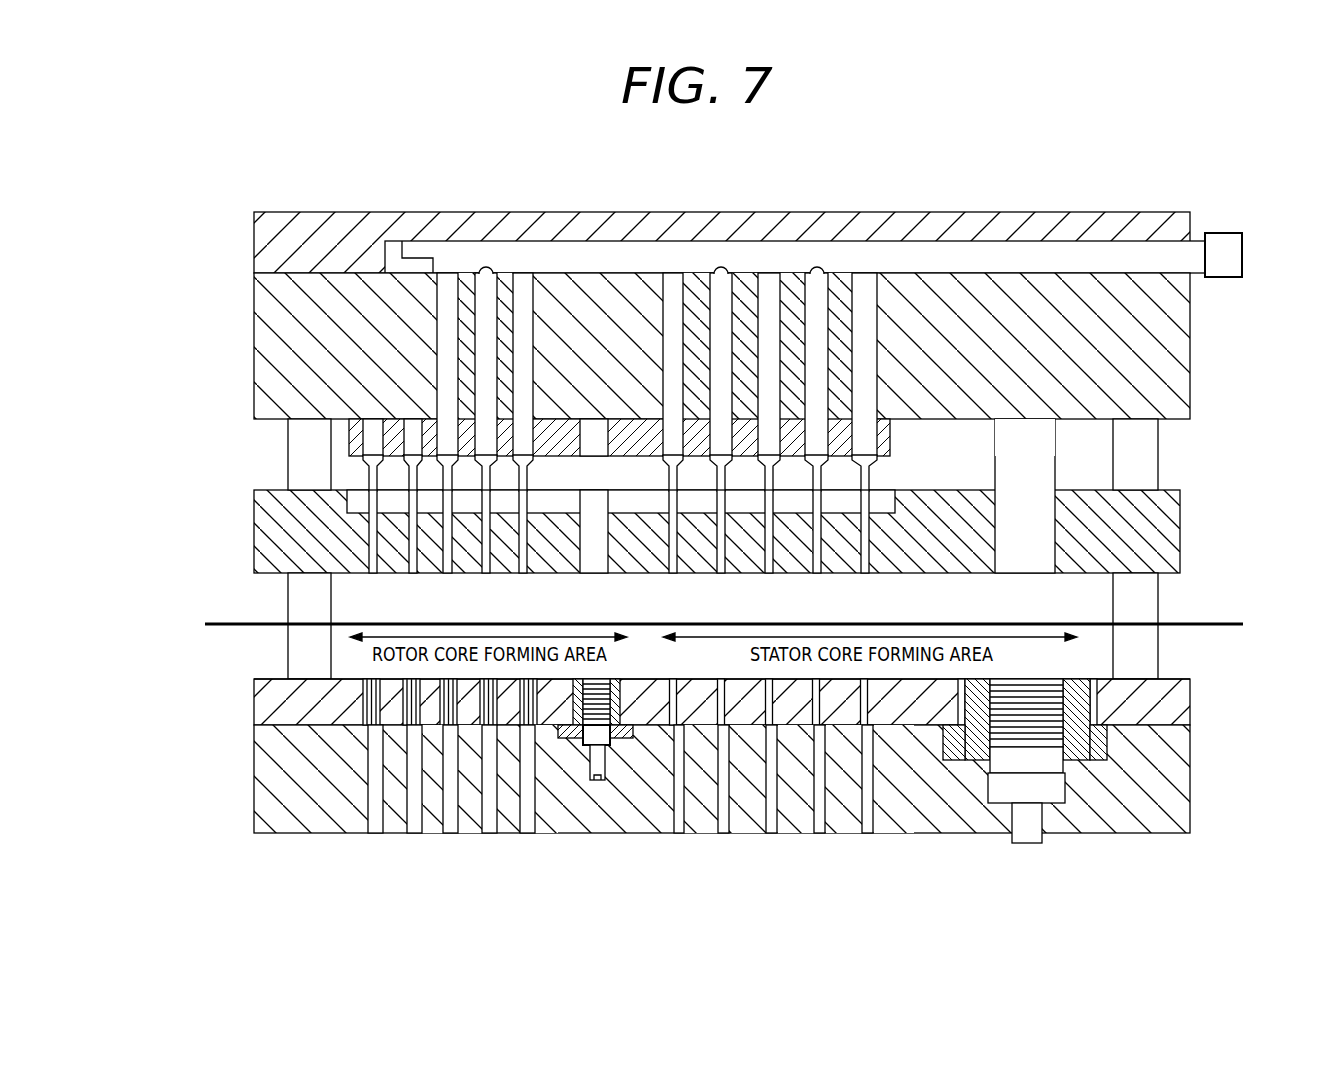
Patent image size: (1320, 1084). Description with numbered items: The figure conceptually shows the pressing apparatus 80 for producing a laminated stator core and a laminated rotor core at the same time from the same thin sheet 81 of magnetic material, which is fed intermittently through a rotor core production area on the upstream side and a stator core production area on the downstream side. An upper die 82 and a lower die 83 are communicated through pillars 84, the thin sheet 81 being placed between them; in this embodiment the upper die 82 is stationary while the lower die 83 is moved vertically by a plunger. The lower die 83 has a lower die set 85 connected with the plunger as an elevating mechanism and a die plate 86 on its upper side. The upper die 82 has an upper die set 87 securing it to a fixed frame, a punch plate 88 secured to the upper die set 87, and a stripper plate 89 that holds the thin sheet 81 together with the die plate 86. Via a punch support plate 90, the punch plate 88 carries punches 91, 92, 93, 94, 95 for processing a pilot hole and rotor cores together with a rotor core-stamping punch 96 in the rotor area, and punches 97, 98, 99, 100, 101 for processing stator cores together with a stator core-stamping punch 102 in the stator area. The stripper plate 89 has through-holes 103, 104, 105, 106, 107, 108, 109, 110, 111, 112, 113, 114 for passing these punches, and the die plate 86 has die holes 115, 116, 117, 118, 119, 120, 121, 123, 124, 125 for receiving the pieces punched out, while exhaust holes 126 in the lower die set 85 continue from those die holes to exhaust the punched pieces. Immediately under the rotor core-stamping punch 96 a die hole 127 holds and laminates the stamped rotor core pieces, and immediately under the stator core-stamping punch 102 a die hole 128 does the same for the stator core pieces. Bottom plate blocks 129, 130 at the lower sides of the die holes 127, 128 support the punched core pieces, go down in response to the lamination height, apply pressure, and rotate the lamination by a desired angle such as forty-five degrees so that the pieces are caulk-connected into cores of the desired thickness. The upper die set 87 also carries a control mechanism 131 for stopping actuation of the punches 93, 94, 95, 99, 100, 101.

The pressing apparatus 80 is at (1040, 168).
The thin sheet 81 is at (215, 622).
The upper die 82 is at (215, 323).
The lower die 83 is at (235, 722).
The pillars 84 is at (290, 468).
The lower die set 85 is at (1175, 768).
The die plate 86 is at (1180, 700).
The upper die set 87 is at (1153, 222).
The punch plate 88 is at (1175, 365).
The stripper plate 89 is at (1160, 525).
The punch support plate 90 is at (349, 423).
The punch 91 is at (372, 419).
The punch 92 is at (410, 419).
The punch 93 is at (447, 273).
The punch 94 is at (486, 267).
The punch 95 is at (525, 273).
The rotor core-stamping punch 96 is at (593, 419).
The punch 97 is at (673, 273).
The punch 98 is at (721, 267).
The punch 99 is at (769, 273).
The punch 100 is at (817, 267).
The punch 101 is at (866, 273).
The stator core-stamping punch 102 is at (1017, 419).
The through-hole 103 is at (371, 573).
The through-hole 104 is at (414, 573).
The through-hole 105 is at (448, 573).
The through-hole 106 is at (487, 573).
The through-hole 107 is at (524, 573).
The through-hole 108 is at (595, 573).
The through-hole 109 is at (674, 573).
The through-hole 110 is at (722, 573).
The through-hole 111 is at (770, 573).
The through-hole 112 is at (818, 573).
The through-hole 113 is at (866, 573).
The through-hole 114 is at (1012, 573).
The die hole 115 is at (335, 679).
The die hole 116 is at (398, 700).
The die hole 117 is at (432, 834).
The die hole 118 is at (472, 834).
The die hole 119 is at (555, 834).
The die hole 120 is at (678, 834).
The die hole 121 is at (723, 834).
The die hole 123 is at (771, 834).
The die hole 124 is at (819, 834).
The die hole 125 is at (867, 834).
The exhaust holes 126 is at (392, 834).
The die hole 127 is at (594, 834).
The die hole 128 is at (953, 762).
The bottom plate block 129 is at (612, 834).
The bottom plate block 130 is at (1030, 840).
The control mechanism 131 is at (1222, 245).